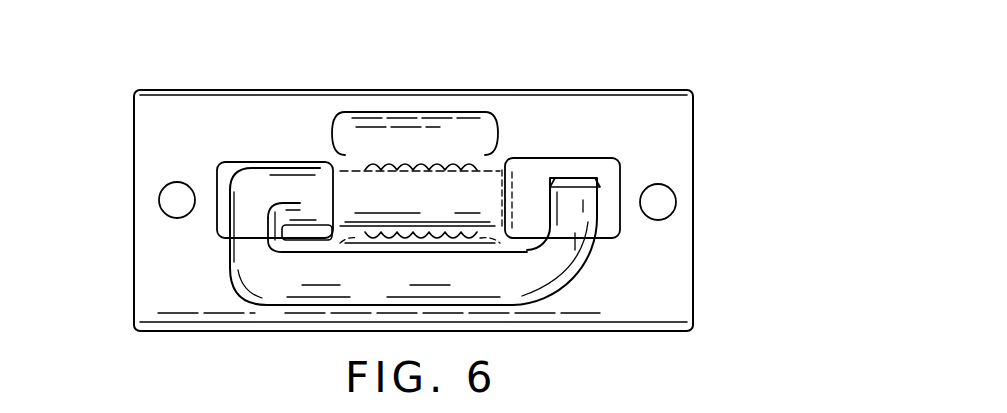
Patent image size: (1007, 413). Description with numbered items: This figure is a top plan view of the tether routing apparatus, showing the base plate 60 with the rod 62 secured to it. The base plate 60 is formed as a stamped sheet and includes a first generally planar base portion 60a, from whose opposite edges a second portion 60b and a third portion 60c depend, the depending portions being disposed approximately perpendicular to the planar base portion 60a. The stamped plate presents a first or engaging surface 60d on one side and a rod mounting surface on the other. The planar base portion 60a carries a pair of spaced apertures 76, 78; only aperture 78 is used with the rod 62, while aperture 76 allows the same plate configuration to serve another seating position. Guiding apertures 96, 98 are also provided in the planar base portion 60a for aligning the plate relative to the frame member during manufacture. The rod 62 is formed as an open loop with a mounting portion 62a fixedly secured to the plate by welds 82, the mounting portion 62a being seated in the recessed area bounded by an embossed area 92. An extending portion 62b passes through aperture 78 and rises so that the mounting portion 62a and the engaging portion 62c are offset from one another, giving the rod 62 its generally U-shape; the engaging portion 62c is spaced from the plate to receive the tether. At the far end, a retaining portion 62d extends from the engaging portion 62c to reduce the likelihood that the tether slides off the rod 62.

The base plate 60 is at (424, 189).
The first generally planar base portion 60a is at (675, 258).
The second portion 60b is at (647, 327).
The third portion 60c is at (585, 90).
The first or engaging surface 60d is at (538, 128).
The rod 62 is at (416, 197).
The mounting portion 62a is at (317, 183).
The extending portion 62b is at (247, 233).
The engaging portion 62c is at (417, 290).
The retaining portion 62d is at (595, 202).
The aperture 76 is at (593, 167).
The aperture 78 is at (232, 170).
The welds 82 is at (402, 162).
The embossed area 92 is at (438, 133).
The guiding aperture 96 is at (157, 199).
The guiding aperture 98 is at (663, 202).